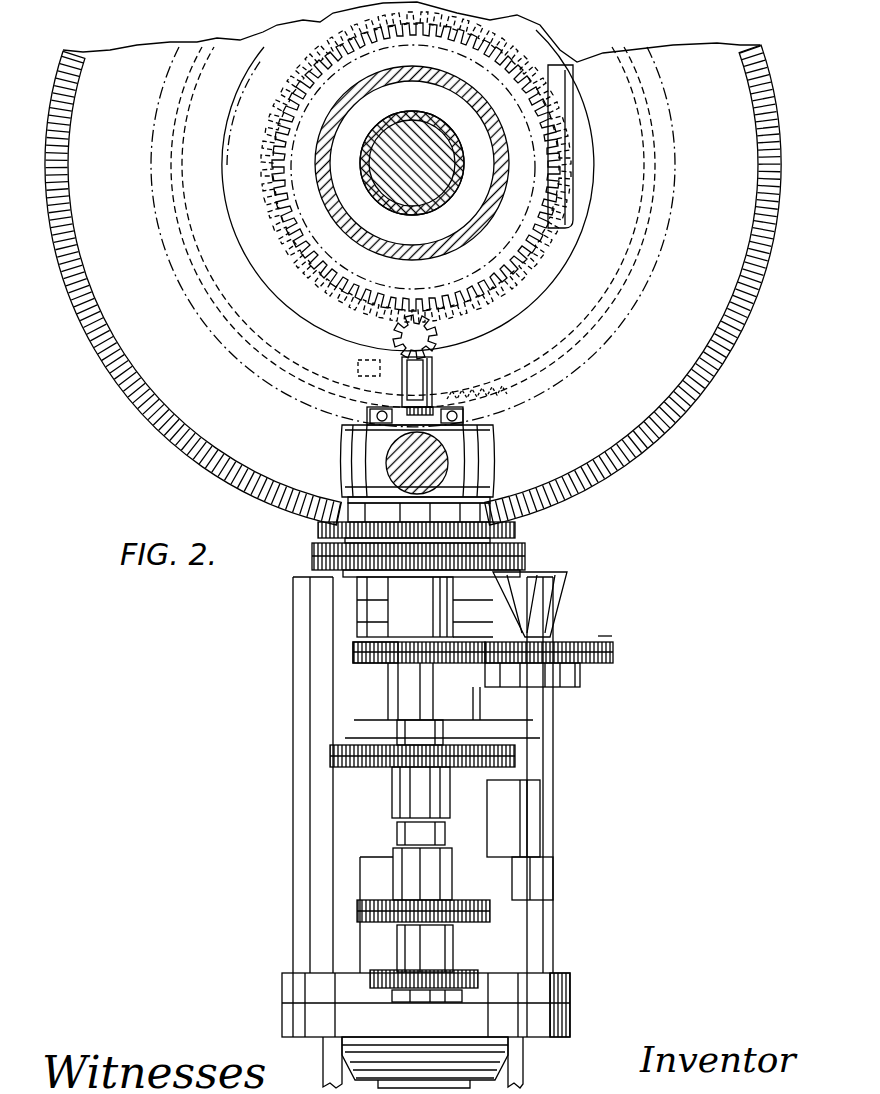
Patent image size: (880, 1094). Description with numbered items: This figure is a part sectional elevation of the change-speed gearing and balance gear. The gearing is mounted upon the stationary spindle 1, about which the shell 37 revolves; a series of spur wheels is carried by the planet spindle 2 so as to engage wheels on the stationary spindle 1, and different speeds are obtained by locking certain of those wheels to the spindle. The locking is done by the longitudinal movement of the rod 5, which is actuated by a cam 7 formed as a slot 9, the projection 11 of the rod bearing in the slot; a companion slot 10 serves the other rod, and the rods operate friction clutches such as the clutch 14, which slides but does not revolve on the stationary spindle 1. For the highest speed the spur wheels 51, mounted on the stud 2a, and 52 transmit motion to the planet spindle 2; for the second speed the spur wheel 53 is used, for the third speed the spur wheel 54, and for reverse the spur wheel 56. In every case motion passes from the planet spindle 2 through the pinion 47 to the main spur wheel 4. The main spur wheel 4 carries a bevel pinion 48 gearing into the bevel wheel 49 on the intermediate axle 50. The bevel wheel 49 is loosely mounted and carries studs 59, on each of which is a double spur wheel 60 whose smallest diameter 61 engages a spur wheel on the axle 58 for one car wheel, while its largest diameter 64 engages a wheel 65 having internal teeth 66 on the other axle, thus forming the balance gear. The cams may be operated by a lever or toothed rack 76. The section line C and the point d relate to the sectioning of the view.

The stationary spindle 1 is at (335, 498).
The planet spindle 2 is at (403, 720).
The stud 2a is at (545, 635).
The main spur wheel 4 is at (510, 555).
The rod 5 is at (417, 382).
The cam 7 is at (254, 58).
The slot 9 is at (517, 13).
The slot 10 is at (250, 94).
The projection 11 is at (417, 468).
The friction clutch 14 is at (322, 175).
The shell 37 is at (387, 585).
The pinion 47 is at (342, 560).
The bevel pinion 48 is at (318, 528).
The bevel wheel 49 is at (130, 333).
The intermediate axle 50 is at (432, 173).
The spur wheel 51 is at (612, 654).
The spur wheel 52 is at (390, 653).
The spur wheel 53 is at (500, 752).
The spur wheel 54 is at (480, 910).
The spur wheel 56 is at (500, 975).
The axle 58 is at (403, 212).
The stud 59 is at (407, 343).
The double spur wheel 60 is at (370, 367).
The smallest diameter 61 is at (407, 365).
The largest diameter 64 is at (447, 397).
The wheel 65 is at (413, 237).
The internal teeth 66 is at (230, 322).
The toothed rack 76 is at (563, 182).
The gear C is at (353, 642).
The part d is at (598, 636).